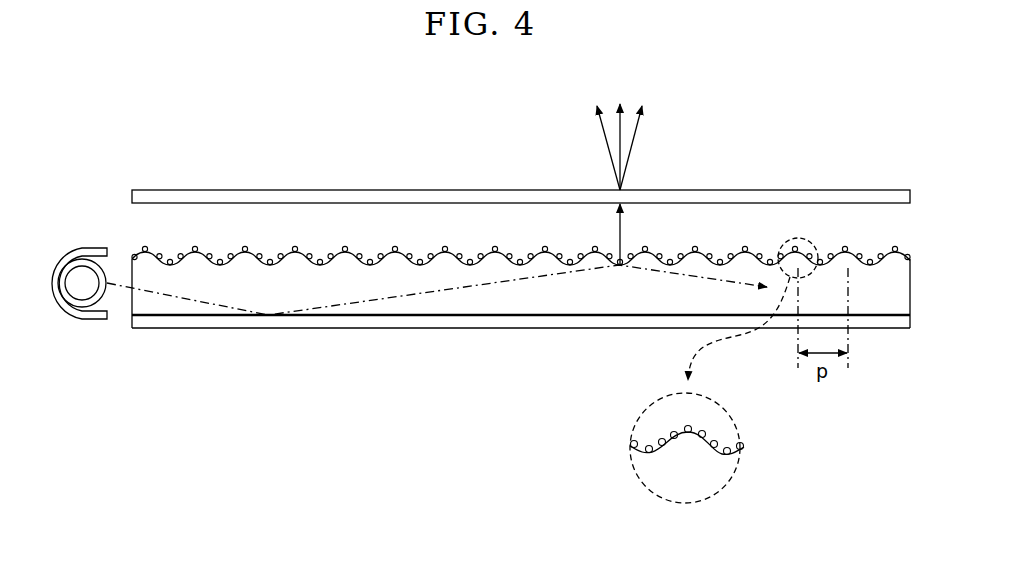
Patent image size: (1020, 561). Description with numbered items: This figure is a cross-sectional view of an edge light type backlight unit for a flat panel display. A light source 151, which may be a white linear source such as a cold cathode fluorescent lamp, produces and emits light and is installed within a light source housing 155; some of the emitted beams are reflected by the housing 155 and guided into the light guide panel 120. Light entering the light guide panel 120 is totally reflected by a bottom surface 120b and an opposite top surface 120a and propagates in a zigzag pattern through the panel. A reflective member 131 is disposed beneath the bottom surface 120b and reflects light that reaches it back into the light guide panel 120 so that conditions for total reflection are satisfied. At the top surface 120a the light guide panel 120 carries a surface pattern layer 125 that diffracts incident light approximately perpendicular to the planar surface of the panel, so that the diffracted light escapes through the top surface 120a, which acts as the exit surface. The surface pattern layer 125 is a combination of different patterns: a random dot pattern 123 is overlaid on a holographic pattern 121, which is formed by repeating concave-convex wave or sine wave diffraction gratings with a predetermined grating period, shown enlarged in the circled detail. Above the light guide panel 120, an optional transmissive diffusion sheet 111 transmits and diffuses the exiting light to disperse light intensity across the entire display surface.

The transmissive diffusion sheet 111 is at (857, 197).
The light source 151 is at (82, 265).
The light source housing 155 is at (99, 323).
The light guide panel 120 is at (521, 315).
The top surface 120a is at (497, 254).
The bottom surface 120b is at (432, 317).
The reflective member 131 is at (558, 322).
The holographic pattern 121 is at (712, 453).
The random dot pattern 123 is at (727, 447).
The surface pattern layer 125 is at (756, 448).